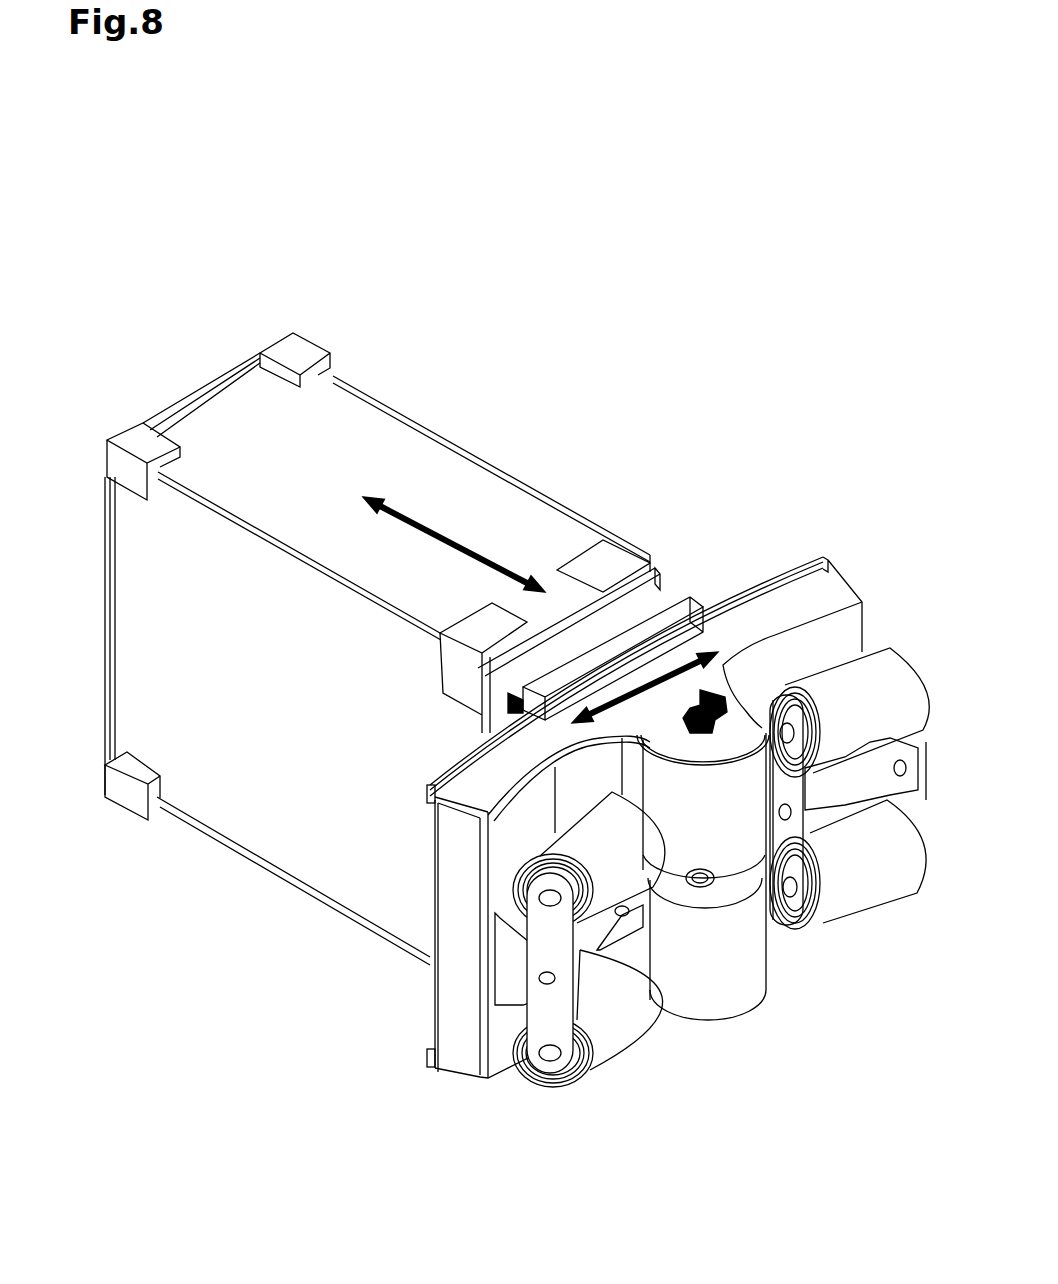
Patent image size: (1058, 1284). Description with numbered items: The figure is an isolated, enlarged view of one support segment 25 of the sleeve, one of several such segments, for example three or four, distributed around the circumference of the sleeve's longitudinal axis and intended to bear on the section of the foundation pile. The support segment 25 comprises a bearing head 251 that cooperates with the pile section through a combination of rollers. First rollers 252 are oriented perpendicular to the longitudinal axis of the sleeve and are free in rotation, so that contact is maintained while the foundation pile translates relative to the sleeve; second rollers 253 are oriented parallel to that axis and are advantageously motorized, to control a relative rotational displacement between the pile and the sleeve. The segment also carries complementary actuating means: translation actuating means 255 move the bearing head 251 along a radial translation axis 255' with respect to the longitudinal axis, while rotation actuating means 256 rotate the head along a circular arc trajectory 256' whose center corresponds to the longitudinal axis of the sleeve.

The support segment 25 is at (377, 576).
The translation actuating means 255 is at (377, 635).
The radial translation axis 255' is at (457, 500).
The rotation actuating means 256 is at (590, 606).
The circular arc trajectory 256' is at (664, 626).
The bearing head 251 is at (798, 556).
The first rollers 252 is at (834, 690).
The second rollers 253 is at (737, 816).